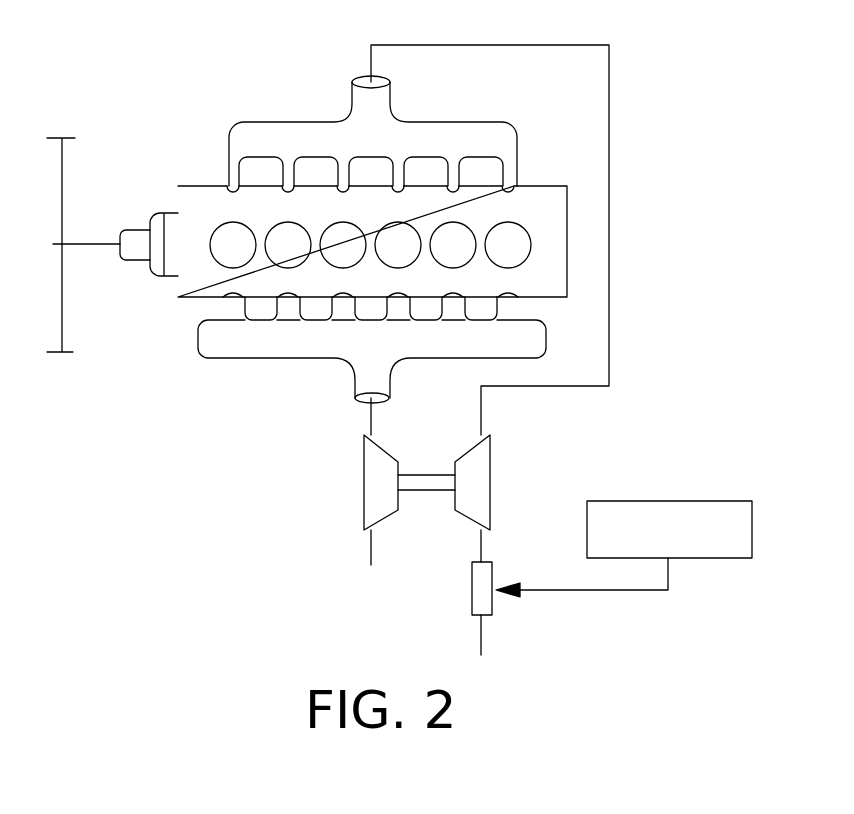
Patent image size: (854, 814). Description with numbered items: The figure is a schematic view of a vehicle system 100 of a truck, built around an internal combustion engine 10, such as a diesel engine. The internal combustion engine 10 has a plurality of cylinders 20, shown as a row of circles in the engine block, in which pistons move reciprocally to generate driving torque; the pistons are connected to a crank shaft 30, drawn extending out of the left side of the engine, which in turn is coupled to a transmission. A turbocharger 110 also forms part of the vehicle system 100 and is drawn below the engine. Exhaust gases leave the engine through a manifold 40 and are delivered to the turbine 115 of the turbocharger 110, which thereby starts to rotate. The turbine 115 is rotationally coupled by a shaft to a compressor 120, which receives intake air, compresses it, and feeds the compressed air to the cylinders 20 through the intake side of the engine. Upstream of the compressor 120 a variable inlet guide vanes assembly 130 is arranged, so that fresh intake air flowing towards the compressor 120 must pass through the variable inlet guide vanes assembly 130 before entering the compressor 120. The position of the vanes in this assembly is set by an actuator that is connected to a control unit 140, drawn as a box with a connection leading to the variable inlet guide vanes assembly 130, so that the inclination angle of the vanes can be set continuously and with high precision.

The internal combustion engine 10 is at (188, 142).
The cylinders 20 is at (520, 257).
The crank shaft 30 is at (90, 243).
The manifold 40 is at (238, 342).
The vehicle system 100 is at (395, 495).
The turbocharger 110 is at (429, 512).
The turbine 115 is at (364, 485).
The compressor 120 is at (490, 485).
The variable inlet guide vanes assembly 130 is at (472, 590).
The control unit 140 is at (668, 501).